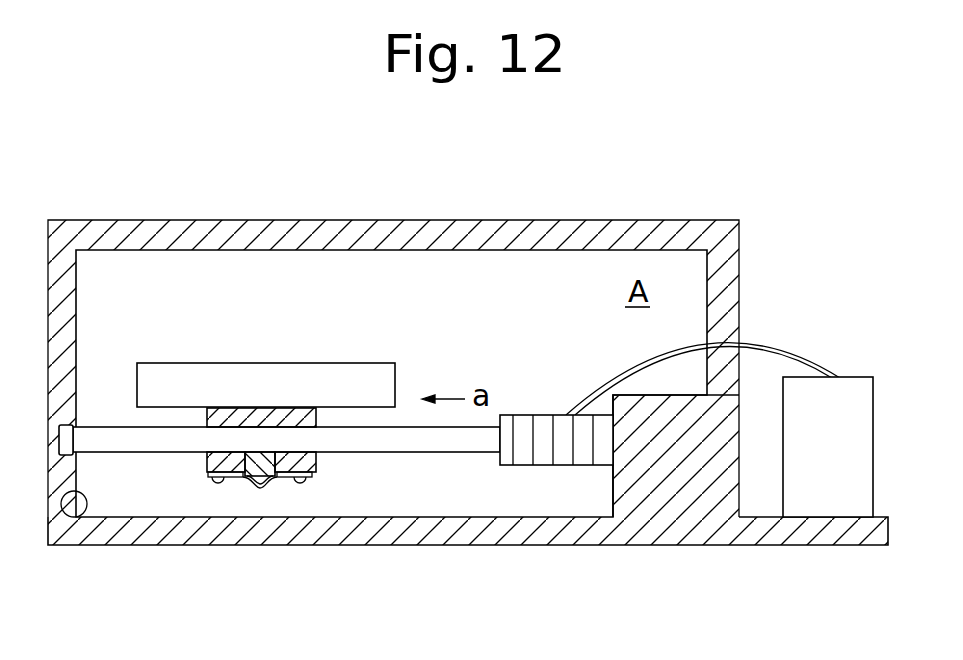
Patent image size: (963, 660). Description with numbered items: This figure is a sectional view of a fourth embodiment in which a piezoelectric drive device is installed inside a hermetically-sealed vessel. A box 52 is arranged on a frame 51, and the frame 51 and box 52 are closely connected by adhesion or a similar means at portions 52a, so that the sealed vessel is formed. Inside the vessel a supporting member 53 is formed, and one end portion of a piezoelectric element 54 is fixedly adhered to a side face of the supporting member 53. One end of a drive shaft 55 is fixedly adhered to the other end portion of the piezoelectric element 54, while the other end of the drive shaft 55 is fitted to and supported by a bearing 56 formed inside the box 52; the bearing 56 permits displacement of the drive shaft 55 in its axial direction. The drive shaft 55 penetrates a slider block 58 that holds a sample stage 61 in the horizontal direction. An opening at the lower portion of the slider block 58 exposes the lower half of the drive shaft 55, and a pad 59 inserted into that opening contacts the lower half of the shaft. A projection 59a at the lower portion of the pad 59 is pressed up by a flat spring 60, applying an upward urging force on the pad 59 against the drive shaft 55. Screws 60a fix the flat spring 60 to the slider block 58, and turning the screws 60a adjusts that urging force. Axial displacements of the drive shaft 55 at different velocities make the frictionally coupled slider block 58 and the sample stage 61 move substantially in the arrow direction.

The frame 51 is at (578, 528).
The box 52 is at (248, 228).
The portions 52a is at (728, 390).
The supporting member 53 is at (668, 478).
The piezoelectric element 54 is at (500, 412).
The drive shaft 55 is at (384, 450).
The bearing 56 is at (73, 425).
The slider block 58 is at (206, 430).
The pad 59 is at (245, 476).
The projection 59a is at (263, 484).
The flat spring 60 is at (278, 478).
The screws 60a is at (216, 482).
The sample stage 61 is at (270, 372).